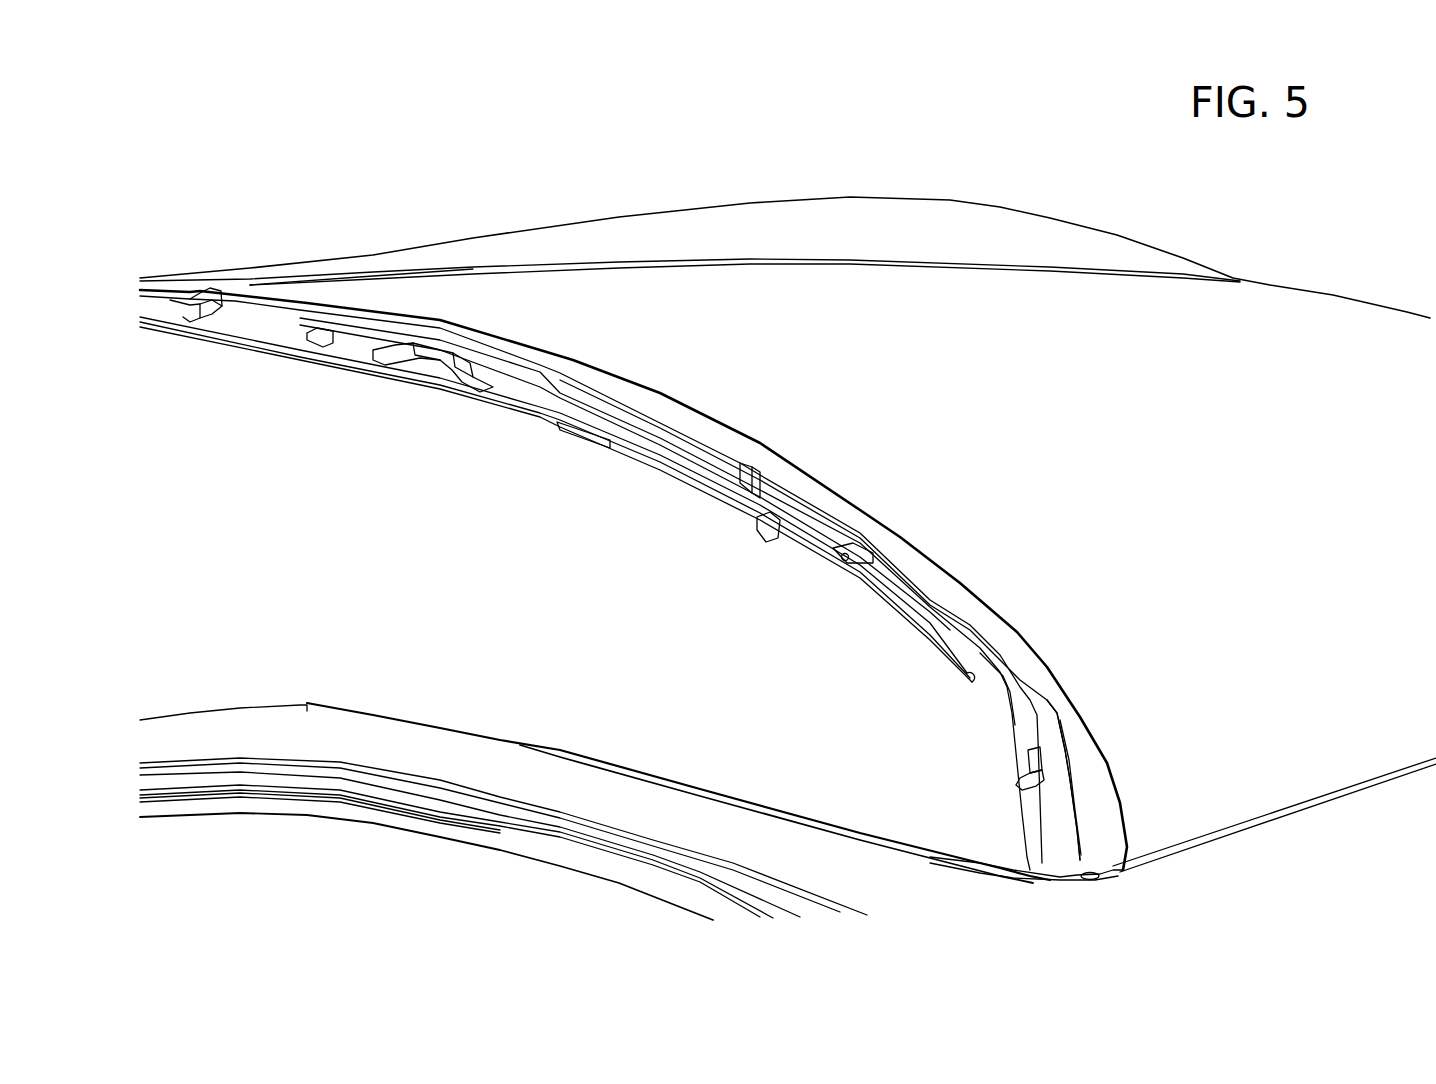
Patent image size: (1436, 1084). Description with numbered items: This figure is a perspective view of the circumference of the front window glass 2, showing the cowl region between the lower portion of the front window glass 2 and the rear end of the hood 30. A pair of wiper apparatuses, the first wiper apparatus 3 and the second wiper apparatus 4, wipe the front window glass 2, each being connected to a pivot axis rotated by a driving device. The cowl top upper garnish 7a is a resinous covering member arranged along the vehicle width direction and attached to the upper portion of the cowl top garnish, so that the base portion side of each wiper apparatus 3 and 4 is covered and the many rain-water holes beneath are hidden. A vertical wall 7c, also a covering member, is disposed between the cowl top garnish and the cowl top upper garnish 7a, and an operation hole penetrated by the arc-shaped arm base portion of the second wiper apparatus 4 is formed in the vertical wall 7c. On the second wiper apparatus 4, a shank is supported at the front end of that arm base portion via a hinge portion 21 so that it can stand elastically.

The front window glass 2 is at (538, 605).
The first wiper apparatus 3 is at (527, 372).
The second wiper apparatus 4 is at (1008, 658).
The cowl top upper garnish 7a is at (1087, 800).
The vertical wall 7c is at (746, 466).
The hinge portion 21 is at (850, 557).
The hood 30 is at (992, 409).